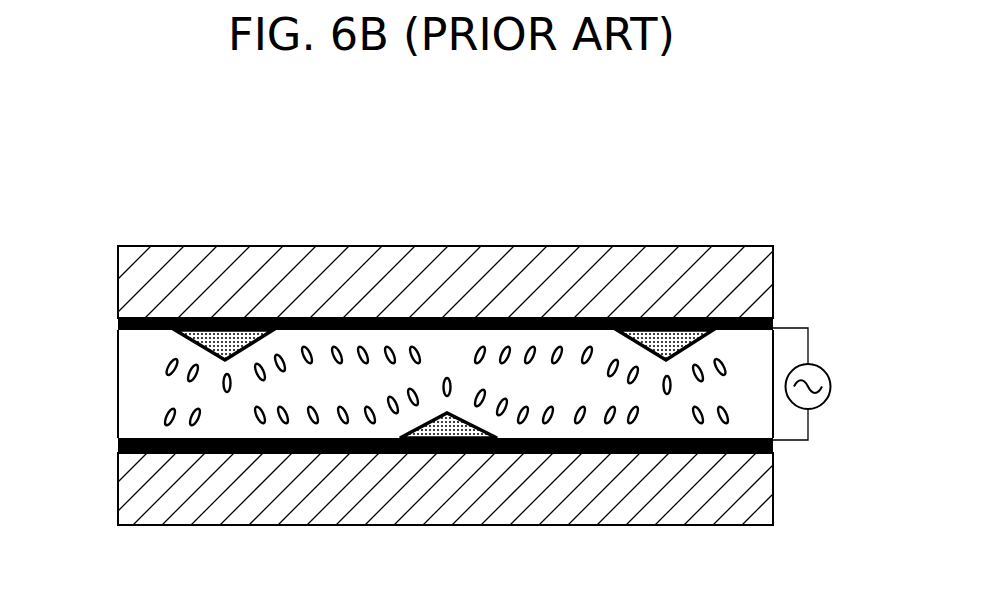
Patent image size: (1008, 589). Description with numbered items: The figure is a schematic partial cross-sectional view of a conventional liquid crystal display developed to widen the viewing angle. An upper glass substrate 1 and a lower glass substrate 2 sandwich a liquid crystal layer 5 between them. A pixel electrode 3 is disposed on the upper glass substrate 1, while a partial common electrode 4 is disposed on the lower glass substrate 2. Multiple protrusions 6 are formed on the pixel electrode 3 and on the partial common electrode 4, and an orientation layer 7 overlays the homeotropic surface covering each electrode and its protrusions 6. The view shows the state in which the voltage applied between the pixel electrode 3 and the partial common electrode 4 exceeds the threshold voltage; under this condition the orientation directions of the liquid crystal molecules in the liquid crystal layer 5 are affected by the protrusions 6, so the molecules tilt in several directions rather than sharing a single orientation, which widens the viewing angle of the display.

The upper glass substrate 1 is at (766, 278).
The lower glass substrate 2 is at (766, 487).
The pixel electrode 3 is at (118, 322).
The partial common electrode 4 is at (118, 450).
The liquid crystal layer 5 is at (125, 377).
The protrusion 6 is at (240, 330).
The orientation layer 7 is at (780, 330).